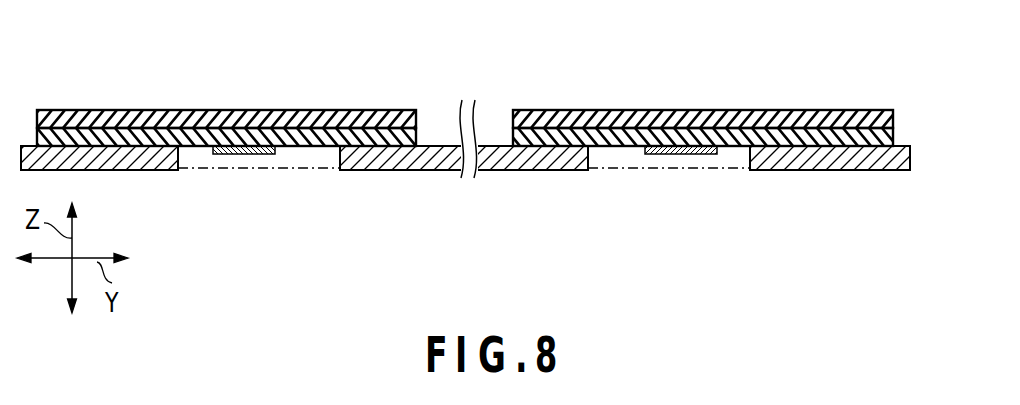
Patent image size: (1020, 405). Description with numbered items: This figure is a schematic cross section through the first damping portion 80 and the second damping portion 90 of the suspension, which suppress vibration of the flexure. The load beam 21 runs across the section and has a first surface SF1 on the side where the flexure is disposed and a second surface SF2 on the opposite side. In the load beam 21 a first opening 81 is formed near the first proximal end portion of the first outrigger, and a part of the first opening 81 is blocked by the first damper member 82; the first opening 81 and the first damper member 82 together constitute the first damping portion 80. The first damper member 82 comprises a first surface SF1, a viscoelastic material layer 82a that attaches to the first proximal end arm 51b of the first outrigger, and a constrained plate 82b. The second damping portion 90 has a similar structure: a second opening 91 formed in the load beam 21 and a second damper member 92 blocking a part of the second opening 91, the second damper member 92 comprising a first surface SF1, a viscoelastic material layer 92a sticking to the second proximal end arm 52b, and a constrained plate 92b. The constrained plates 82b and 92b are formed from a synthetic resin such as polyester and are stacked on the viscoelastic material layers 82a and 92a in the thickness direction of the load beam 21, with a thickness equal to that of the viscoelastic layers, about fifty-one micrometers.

The first damping portion 80 is at (226, 128).
The first damper member 82 is at (226, 73).
The viscoelastic material layer 82a is at (105, 131).
The constrained plate 82b is at (147, 110).
The first opening 81 is at (302, 170).
The first proximal end arm 51b is at (255, 154).
The load beam 21 is at (393, 162).
The first surface SF1 is at (440, 146).
The second surface SF2 is at (437, 170).
The second damping portion 90 is at (703, 128).
The second damper member 92 is at (703, 73).
The viscoelastic material layer 92a is at (832, 110).
The constrained plate 92b is at (777, 112).
The second opening 91 is at (625, 170).
The second proximal end arm 52b is at (675, 155).